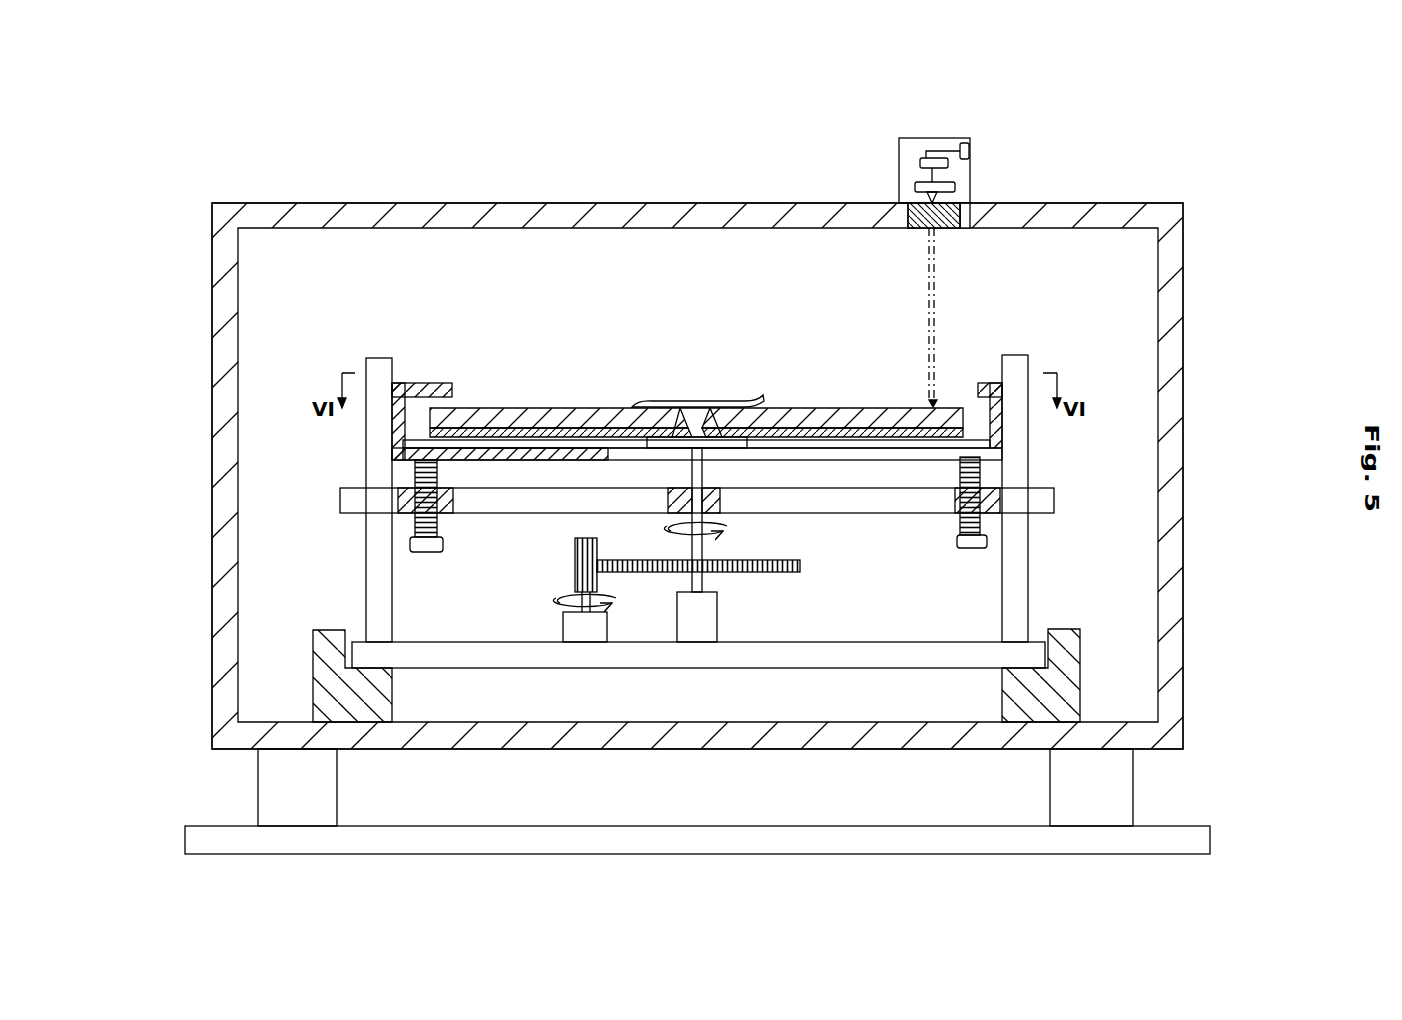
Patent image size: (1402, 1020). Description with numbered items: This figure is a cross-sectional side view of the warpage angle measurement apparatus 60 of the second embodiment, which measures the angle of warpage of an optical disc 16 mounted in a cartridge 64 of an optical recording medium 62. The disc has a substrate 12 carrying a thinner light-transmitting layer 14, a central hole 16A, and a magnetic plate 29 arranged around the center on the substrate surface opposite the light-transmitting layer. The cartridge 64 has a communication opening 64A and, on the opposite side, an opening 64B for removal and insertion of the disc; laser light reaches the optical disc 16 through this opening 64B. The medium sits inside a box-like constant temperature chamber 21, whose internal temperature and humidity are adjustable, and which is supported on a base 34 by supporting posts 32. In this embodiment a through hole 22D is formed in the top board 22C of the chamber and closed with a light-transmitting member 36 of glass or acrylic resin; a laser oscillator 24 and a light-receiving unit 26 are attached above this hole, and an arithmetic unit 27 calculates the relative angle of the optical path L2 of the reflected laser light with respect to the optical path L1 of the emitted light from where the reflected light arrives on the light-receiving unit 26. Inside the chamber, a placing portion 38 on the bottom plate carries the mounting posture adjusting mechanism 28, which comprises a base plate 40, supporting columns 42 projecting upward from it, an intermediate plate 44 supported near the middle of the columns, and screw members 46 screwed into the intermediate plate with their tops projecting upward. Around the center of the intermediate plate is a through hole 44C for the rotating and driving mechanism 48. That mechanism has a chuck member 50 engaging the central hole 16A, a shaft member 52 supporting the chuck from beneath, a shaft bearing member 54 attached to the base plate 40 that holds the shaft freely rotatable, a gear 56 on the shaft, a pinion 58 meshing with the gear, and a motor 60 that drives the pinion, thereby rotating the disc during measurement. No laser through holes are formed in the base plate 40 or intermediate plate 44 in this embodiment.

The substrate 12 is at (780, 410).
The light-transmitting layer 14 is at (813, 432).
The optical disc 16 is at (953, 402).
The central hole 16A is at (693, 408).
The constant temperature chamber 21 is at (634, 200).
The top board 22C is at (1125, 203).
The through hole 22D is at (960, 206).
The laser oscillator 24 is at (915, 187).
The light-receiving unit 26 is at (920, 163).
The arithmetic unit 27 is at (968, 150).
The mounting posture adjusting mechanism 28 is at (766, 473).
The magnetic plate 29 is at (632, 404).
The supporting post 32 is at (1133, 800).
The base 34 is at (1210, 826).
The light-transmitting member 36 is at (950, 230).
The placing portion 38 is at (313, 652).
The base plate 40 is at (420, 642).
The supporting column 42 is at (366, 362).
The intermediate plate 44 is at (340, 498).
The through hole 44C is at (686, 490).
The screw member 46 is at (437, 528).
The rotating and driving mechanism 48 is at (620, 545).
The chuck member 50 is at (733, 441).
The shaft member 52 is at (702, 537).
The shaft bearing member 54 is at (717, 622).
The gear 56 is at (612, 560).
The pinion 58 is at (575, 549).
The motor 60 is at (722, 115).
The optical recording medium 62 is at (697, 412).
The cartridge 64 is at (697, 395).
The communication opening 64A is at (605, 456).
The opening for removal and insertion 64B is at (452, 392).
The optical path of emitted laser light L1 is at (938, 270).
The optical path of reflected laser light L2 is at (928, 300).